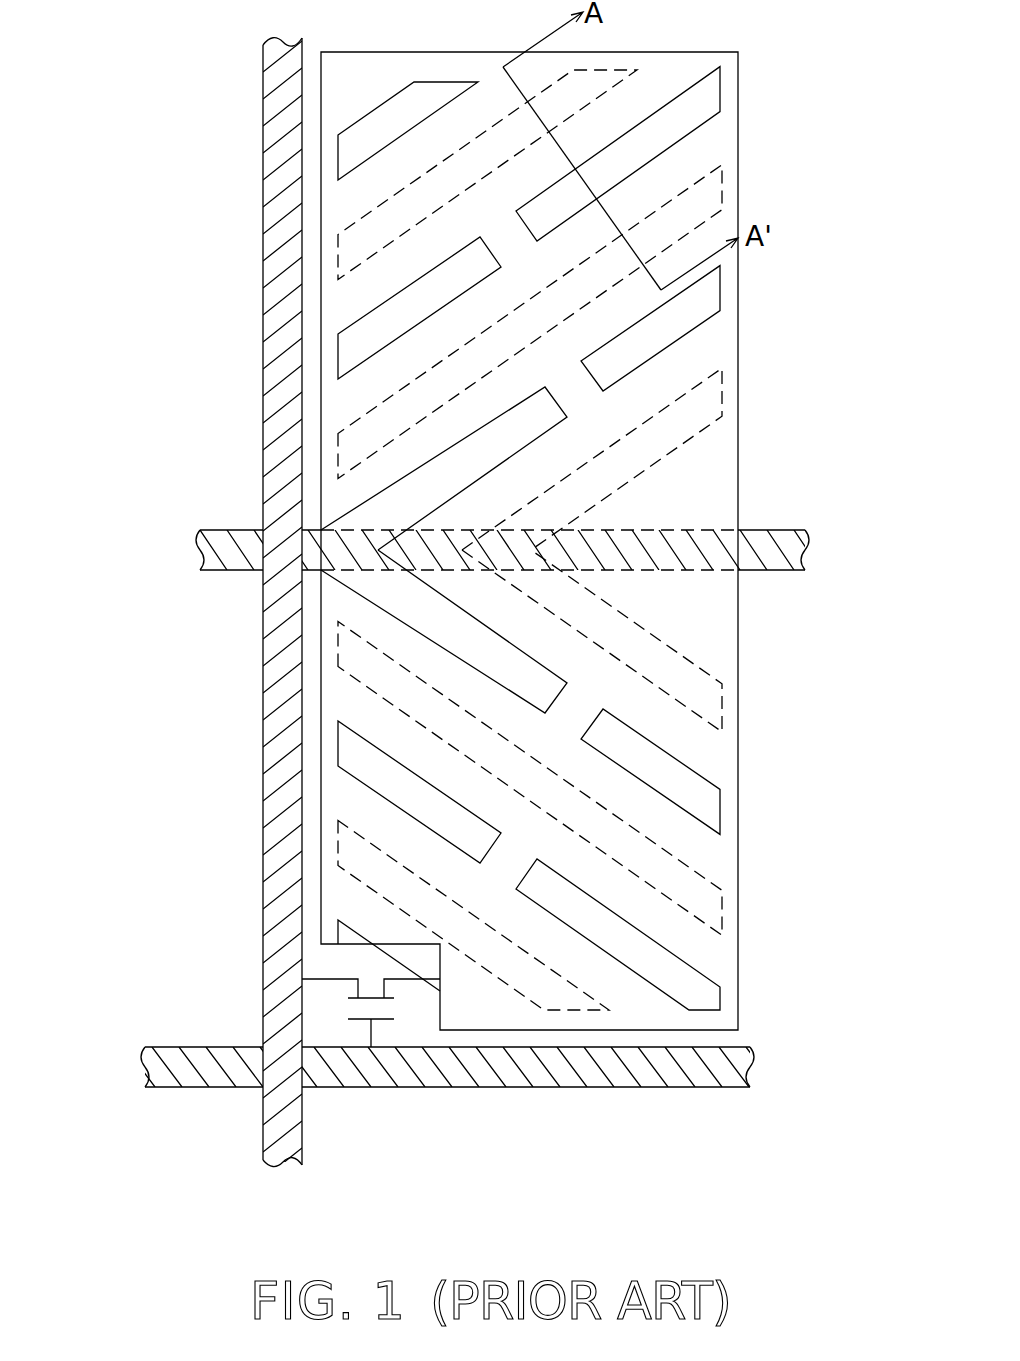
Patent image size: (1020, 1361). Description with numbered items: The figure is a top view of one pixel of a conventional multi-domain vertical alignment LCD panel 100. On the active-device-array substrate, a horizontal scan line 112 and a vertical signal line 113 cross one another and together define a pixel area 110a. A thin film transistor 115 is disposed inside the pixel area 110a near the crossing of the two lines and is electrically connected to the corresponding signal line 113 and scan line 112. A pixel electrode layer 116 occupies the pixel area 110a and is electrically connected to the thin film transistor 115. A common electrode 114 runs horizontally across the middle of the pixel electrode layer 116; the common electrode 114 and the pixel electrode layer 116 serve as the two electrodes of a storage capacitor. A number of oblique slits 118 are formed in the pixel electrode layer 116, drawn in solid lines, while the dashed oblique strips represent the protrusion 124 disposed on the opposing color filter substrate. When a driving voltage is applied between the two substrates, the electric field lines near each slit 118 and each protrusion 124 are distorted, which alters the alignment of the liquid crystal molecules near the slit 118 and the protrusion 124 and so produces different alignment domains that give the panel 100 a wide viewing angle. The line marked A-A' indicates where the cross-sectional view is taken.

The MVA LCD panel 100 is at (765, 1186).
The pixel area 110a is at (760, 927).
The scan line 112 is at (145, 1056).
The signal line 113 is at (283, 1168).
The common electrode 114 is at (788, 542).
The thin film transistor 115 is at (327, 1013).
The pixel electrode layer 116 is at (708, 618).
The slit 118 is at (722, 90).
The protrusion 124 is at (737, 179).